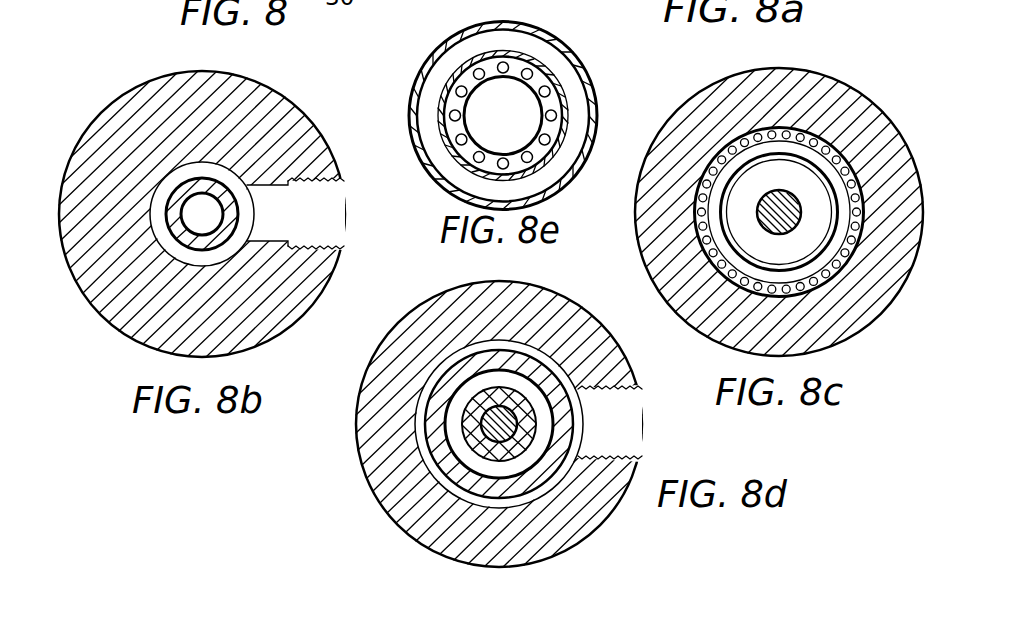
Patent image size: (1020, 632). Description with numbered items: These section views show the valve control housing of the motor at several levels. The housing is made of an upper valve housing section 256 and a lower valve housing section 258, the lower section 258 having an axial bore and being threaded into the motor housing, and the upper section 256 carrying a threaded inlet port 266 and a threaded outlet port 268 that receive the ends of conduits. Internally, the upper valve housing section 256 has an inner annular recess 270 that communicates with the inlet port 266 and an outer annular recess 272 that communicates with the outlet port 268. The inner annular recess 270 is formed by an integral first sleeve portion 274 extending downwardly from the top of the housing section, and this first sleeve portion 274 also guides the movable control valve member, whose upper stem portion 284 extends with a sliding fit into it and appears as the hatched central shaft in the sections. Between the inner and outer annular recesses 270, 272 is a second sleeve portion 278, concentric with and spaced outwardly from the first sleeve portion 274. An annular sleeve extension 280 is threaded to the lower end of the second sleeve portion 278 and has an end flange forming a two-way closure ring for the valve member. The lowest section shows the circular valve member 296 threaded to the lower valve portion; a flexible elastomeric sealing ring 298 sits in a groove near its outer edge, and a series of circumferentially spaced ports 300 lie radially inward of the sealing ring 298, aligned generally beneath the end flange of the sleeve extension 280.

In FIG. 8B, the upper valve housing section 256 is at (125, 102).
In FIG. 8D, the upper valve housing section 256 is at (428, 315).
In FIG. 8C, the lower valve housing section 258 is at (837, 93).
In FIG. 8B, the inlet port 266 is at (342, 237).
In FIG. 8D, the outlet port 268 is at (623, 448).
In FIG. 8B, the inner annular recess 270 is at (223, 175).
In FIG. 8D, the inner annular recess 270 is at (583, 393).
In FIG. 8C, the outer annular recess 272 is at (850, 172).
In FIG. 8D, the outer annular recess 272 is at (540, 357).
In FIG. 8B, the first sleeve portion 274 is at (228, 210).
In FIG. 8D, the first sleeve portion 274 is at (537, 412).
In FIG. 8D, the second sleeve portion 278 is at (553, 392).
In FIG. 8C, the annular sleeve extension 280 is at (850, 215).
In FIG. 8C, the upper stem portion 284 is at (797, 186).
In FIG. 8D, the upper stem portion 284 is at (518, 430).
In FIG. 8E, the circular valve member 296 is at (530, 32).
In FIG. 8E, the sealing ring 298 is at (572, 88).
In FIG. 8E, the ports 300 is at (448, 92).